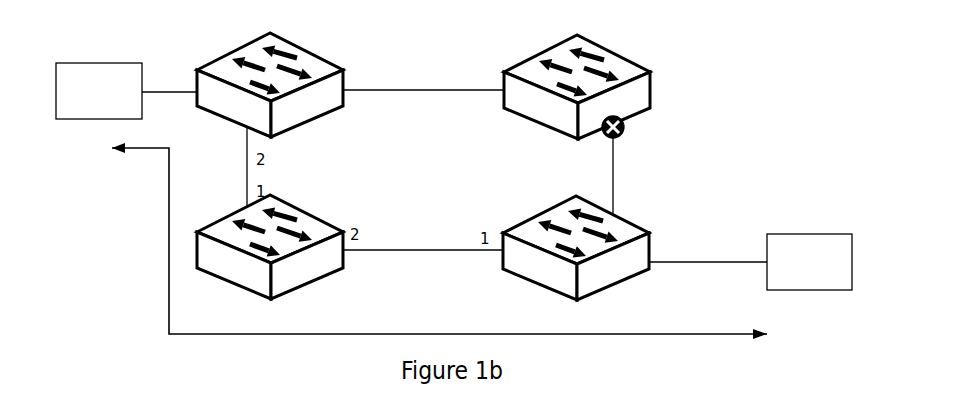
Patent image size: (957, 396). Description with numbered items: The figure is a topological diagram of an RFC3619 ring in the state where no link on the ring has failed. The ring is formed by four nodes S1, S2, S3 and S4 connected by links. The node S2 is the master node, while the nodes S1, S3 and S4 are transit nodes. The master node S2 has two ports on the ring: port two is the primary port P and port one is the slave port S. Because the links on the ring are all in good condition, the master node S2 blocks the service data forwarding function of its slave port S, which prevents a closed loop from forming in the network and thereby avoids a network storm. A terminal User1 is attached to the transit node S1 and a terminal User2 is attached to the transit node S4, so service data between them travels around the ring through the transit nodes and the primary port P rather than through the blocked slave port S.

The transit node S1 is at (297, 73).
The master node S2 is at (606, 77).
The transit node S3 is at (301, 263).
The transit node S4 is at (614, 256).
The primary port P is at (423, 62).
The slave port S is at (631, 164).
The user terminal 1 User1 is at (99, 91).
The user terminal 2 User2 is at (809, 262).